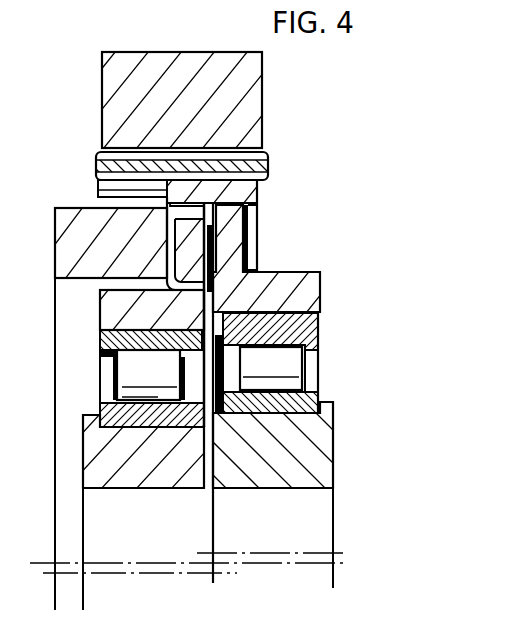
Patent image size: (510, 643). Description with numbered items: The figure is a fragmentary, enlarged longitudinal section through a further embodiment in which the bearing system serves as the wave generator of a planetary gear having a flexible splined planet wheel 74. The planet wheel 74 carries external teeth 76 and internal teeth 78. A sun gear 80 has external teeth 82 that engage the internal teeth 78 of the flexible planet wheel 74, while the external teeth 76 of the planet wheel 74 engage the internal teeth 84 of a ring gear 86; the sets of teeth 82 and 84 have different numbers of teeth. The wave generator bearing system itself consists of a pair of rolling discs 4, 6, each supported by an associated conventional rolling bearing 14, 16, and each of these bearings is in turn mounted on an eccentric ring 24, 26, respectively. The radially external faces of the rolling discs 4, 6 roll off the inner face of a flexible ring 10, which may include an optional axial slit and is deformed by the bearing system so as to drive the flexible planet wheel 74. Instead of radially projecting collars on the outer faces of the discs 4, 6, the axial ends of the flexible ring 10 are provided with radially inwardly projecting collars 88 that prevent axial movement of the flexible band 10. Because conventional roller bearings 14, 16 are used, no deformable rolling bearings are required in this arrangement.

The rolling disc 4 is at (190, 265).
The rolling disc 6 is at (265, 271).
The flexible ring 10 is at (252, 228).
The rolling bearing 14 is at (130, 373).
The rolling bearing 16 is at (285, 368).
The eccentric ring 24 is at (105, 455).
The eccentric ring 26 is at (297, 452).
The flexible splined planet wheel 74 is at (270, 167).
The external teeth 76 is at (267, 150).
The internal teeth 78 is at (266, 183).
The sun gear 80 is at (76, 246).
The external teeth 82 is at (98, 185).
The internal teeth 84 is at (118, 146).
The ring gear 86 is at (214, 72).
The radially inwardly projecting collars 88 is at (102, 197).